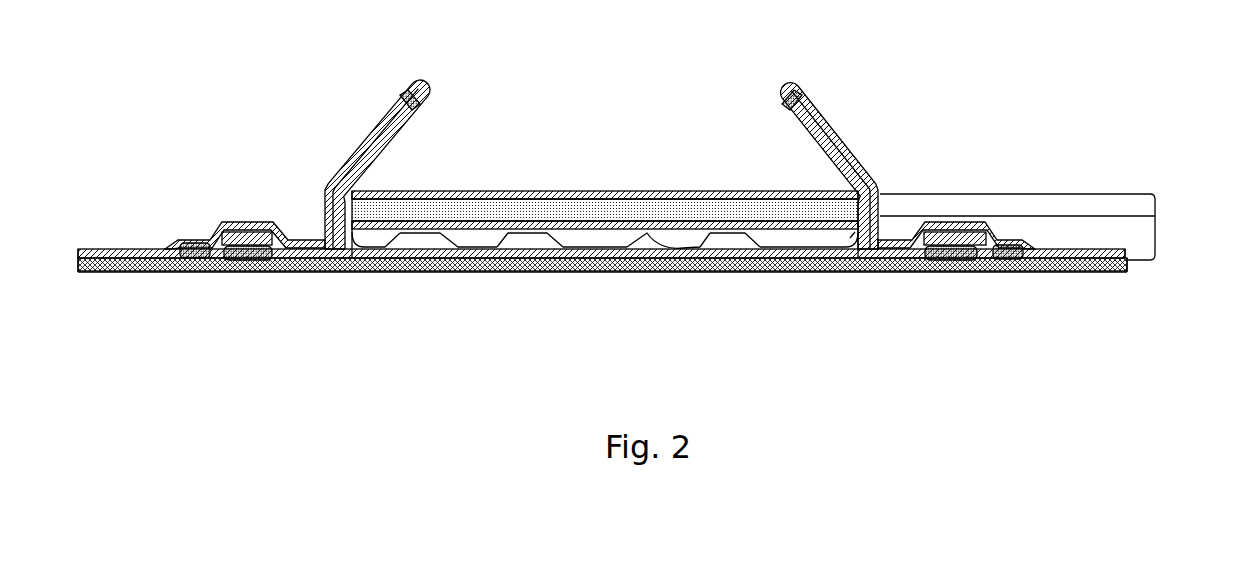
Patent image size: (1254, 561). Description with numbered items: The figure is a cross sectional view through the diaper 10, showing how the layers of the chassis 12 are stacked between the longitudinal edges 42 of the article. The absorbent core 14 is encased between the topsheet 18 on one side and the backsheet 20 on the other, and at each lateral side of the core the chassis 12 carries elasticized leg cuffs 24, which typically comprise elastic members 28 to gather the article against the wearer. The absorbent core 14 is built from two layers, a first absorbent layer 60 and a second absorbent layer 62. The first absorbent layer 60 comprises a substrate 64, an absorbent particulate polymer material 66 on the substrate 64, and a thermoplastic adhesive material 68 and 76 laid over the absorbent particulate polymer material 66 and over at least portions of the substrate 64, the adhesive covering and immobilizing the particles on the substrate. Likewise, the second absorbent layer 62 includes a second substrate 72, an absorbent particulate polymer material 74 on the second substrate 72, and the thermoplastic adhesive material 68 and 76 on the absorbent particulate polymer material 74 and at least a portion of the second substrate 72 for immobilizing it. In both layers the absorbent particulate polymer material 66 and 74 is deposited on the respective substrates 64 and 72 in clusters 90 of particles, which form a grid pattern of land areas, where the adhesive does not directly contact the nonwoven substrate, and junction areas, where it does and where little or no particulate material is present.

The diaper 10 is at (658, 156).
The chassis 12 is at (866, 279).
The absorbent core 14 is at (793, 268).
The topsheet 18 is at (542, 191).
The backsheet 20 is at (568, 266).
The elasticized leg cuffs 24 is at (344, 132).
The elastic members 28 is at (405, 83).
The longitudinal edges 42 is at (1135, 282).
The first absorbent layer 60 is at (520, 262).
The second absorbent layer 62 is at (485, 233).
The substrate 64 is at (627, 266).
The absorbent particulate polymer material 66 is at (743, 266).
The thermoplastic adhesive material 68 is at (712, 270).
The substrate 72 is at (457, 266).
The absorbent particulate polymer material 74 is at (580, 238).
The thermoplastic adhesive material 76 is at (399, 212).
The clusters 90 is at (430, 262).